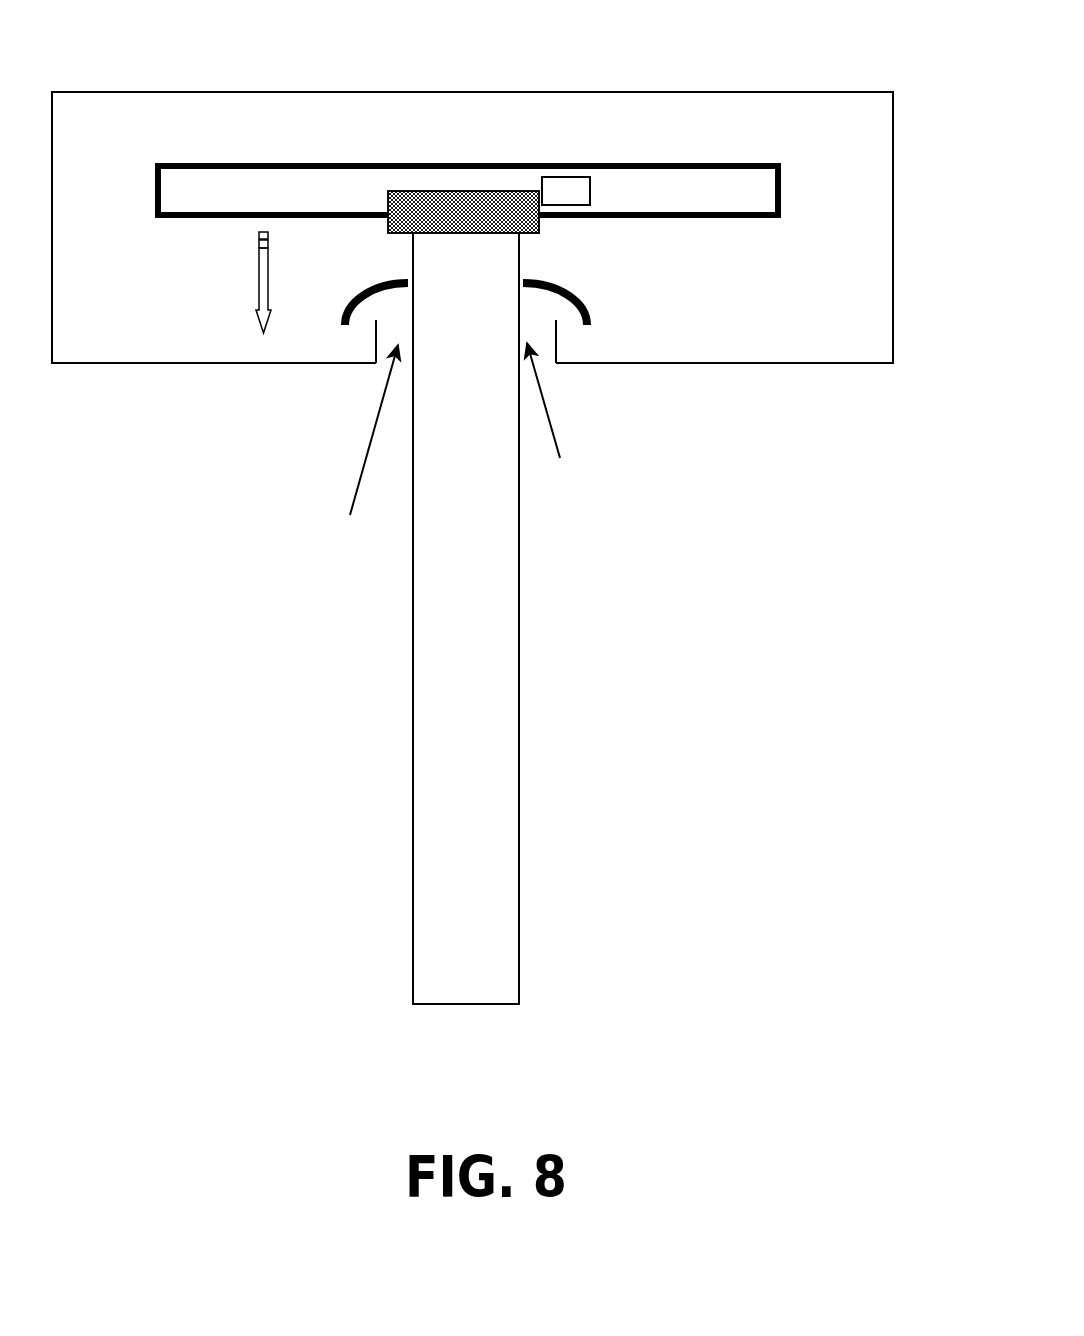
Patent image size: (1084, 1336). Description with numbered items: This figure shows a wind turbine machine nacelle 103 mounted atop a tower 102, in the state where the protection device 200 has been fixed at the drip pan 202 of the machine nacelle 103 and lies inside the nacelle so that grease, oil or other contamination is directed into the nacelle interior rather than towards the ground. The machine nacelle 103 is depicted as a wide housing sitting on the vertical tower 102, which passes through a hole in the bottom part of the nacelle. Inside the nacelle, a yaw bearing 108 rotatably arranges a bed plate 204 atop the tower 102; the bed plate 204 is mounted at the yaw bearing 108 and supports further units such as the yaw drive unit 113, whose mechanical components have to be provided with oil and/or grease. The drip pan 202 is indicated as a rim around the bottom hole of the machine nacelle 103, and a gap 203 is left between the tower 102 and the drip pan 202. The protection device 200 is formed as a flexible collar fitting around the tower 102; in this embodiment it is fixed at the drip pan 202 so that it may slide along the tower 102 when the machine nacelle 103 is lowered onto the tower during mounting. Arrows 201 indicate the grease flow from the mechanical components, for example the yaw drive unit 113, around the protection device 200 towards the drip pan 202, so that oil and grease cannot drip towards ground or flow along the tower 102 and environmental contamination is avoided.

The tower 102 is at (518, 620).
The machine nacelle 103 is at (893, 363).
The yaw bearing 108 is at (413, 212).
The yaw drive unit 113 is at (573, 192).
The protection device 200 is at (372, 310).
The arrows 201 is at (255, 313).
The drip pan 202 is at (374, 345).
The gap 203 is at (454, 455).
The bed plate 204 is at (190, 167).